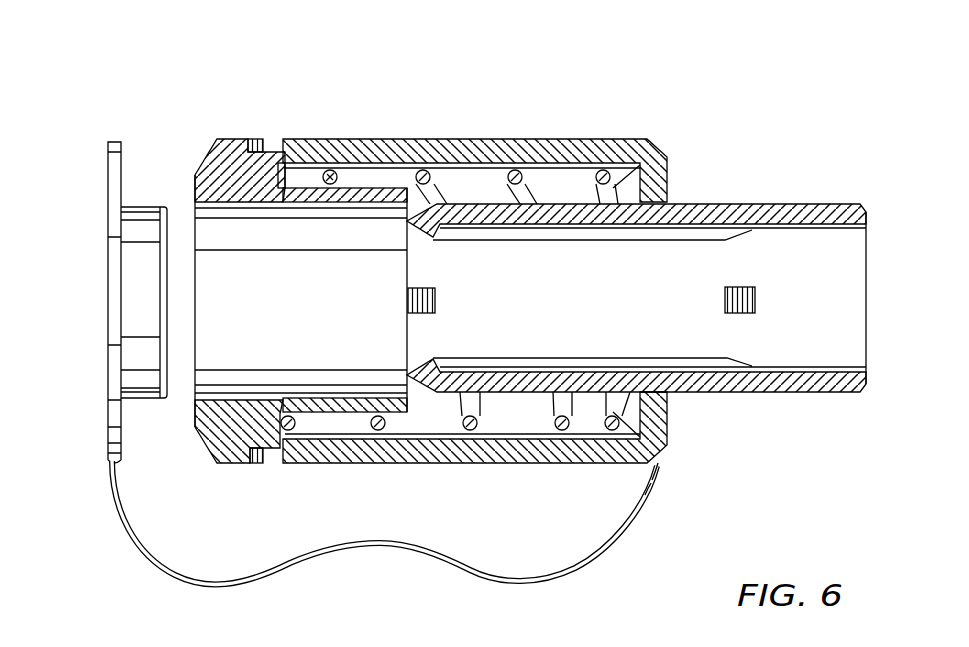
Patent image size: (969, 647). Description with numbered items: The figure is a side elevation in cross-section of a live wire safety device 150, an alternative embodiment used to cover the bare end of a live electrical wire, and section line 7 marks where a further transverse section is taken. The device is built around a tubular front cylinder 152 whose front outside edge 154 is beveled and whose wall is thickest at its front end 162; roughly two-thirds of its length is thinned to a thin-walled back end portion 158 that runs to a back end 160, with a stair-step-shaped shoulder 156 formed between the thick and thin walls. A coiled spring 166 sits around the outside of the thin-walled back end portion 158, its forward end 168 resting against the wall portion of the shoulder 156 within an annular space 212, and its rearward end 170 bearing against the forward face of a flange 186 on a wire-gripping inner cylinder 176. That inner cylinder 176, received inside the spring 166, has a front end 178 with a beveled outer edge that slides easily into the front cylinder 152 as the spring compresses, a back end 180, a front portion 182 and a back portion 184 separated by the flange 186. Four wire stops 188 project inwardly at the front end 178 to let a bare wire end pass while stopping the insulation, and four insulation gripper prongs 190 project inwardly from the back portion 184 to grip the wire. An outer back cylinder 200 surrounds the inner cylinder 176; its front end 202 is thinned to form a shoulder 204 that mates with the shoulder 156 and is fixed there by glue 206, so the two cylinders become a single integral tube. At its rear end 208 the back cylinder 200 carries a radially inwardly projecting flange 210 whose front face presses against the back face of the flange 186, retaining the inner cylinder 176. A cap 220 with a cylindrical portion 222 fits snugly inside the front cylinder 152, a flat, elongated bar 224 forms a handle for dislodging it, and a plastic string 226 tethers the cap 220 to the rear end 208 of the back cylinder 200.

The section line 7- 7 is at (407, 102).
The live wire safety device 150 is at (690, 54).
The front cylinder 152 is at (431, 268).
The front outside edge 154 is at (207, 150).
The shoulder 156 is at (285, 150).
The thin-walled back end portion 158 is at (350, 412).
The back end 160 is at (447, 397).
The front end 162 is at (193, 176).
The coiled spring 166 is at (522, 190).
The forward end 168 is at (297, 430).
The rearward end 170 is at (590, 168).
The wire-gripping inner cylinder 176 is at (636, 294).
The front end 178 is at (407, 233).
The back end 180 is at (868, 226).
The front portion 182 is at (592, 400).
The back portion 184 is at (807, 392).
The flange 186 is at (640, 500).
The wire stops 188 is at (418, 237).
The insulation gripper prongs 190 is at (723, 288).
The outer back cylinder 200 is at (530, 140).
The front end 202 is at (262, 462).
The shoulder 204 is at (257, 433).
The glue 206 is at (253, 150).
The rear end 208 is at (657, 490).
The radially inwardly projecting flange 210 is at (670, 420).
The annular space 212 is at (392, 140).
The cap 220 is at (107, 323).
The cylindrical portion 222 is at (140, 205).
The flat, elongated bar 224 is at (107, 175).
The plastic string 226 is at (210, 583).